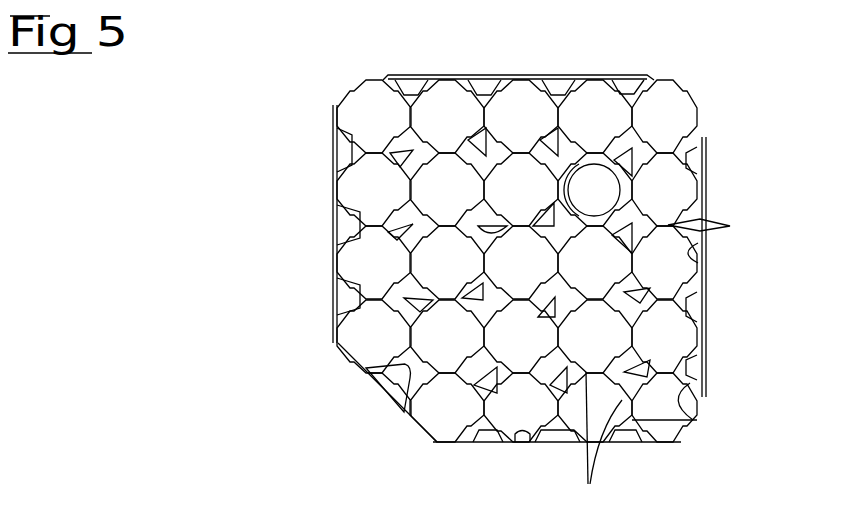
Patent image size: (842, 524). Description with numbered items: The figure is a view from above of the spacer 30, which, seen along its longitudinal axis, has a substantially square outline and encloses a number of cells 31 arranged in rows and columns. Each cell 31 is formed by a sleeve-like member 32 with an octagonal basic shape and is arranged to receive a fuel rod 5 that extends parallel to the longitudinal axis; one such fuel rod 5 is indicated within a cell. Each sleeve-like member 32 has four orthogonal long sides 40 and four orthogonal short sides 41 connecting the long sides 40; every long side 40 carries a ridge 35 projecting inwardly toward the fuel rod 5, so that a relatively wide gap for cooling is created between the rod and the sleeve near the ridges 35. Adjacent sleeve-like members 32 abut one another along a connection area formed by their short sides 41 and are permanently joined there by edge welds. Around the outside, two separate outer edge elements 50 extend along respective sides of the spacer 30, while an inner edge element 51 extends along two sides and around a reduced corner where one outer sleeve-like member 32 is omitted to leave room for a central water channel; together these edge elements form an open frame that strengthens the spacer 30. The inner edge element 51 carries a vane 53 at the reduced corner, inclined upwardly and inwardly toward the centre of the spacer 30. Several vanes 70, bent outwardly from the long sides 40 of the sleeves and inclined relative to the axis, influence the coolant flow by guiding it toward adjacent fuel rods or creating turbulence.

The fuel rod 5 is at (598, 166).
The spacer 30 is at (266, 219).
The cell 31 is at (461, 127).
The sleeve-like member 32 is at (712, 226).
The ridge 35 is at (660, 317).
The long side 40 is at (695, 420).
The short side 41 is at (533, 441).
The outer edge element 50 is at (553, 78).
The inner edge element 51 is at (460, 442).
The vane 53 is at (398, 380).
The vane 70 is at (403, 233).